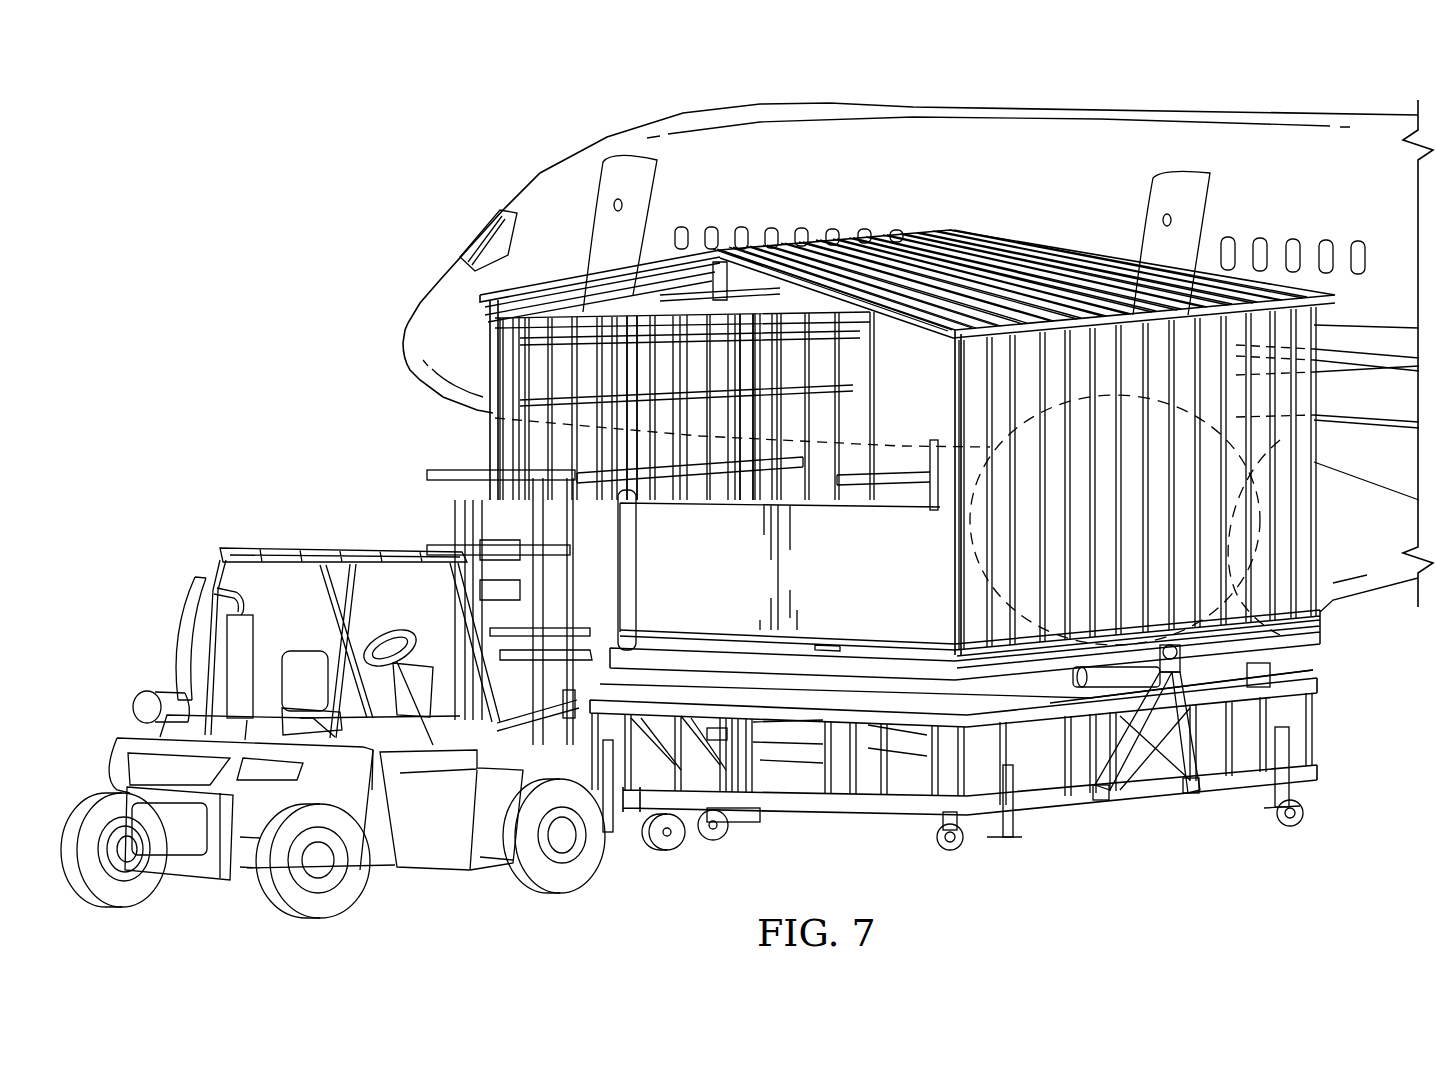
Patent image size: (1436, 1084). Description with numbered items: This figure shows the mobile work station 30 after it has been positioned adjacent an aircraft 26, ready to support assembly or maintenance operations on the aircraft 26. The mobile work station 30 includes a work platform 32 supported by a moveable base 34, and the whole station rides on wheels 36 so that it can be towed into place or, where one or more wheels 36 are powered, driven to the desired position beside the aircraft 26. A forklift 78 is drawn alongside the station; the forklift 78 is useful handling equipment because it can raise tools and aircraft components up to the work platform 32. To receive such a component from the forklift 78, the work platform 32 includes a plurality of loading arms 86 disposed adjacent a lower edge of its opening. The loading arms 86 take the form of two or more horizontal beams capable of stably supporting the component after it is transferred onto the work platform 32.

The aircraft 26 is at (697, 115).
The mobile work station 30 is at (891, 208).
The work platform 32 is at (1290, 641).
The moveable base 34 is at (1318, 724).
The wheels 36 is at (951, 850).
The forklift 78 is at (259, 555).
The loading arms 86 is at (903, 472).